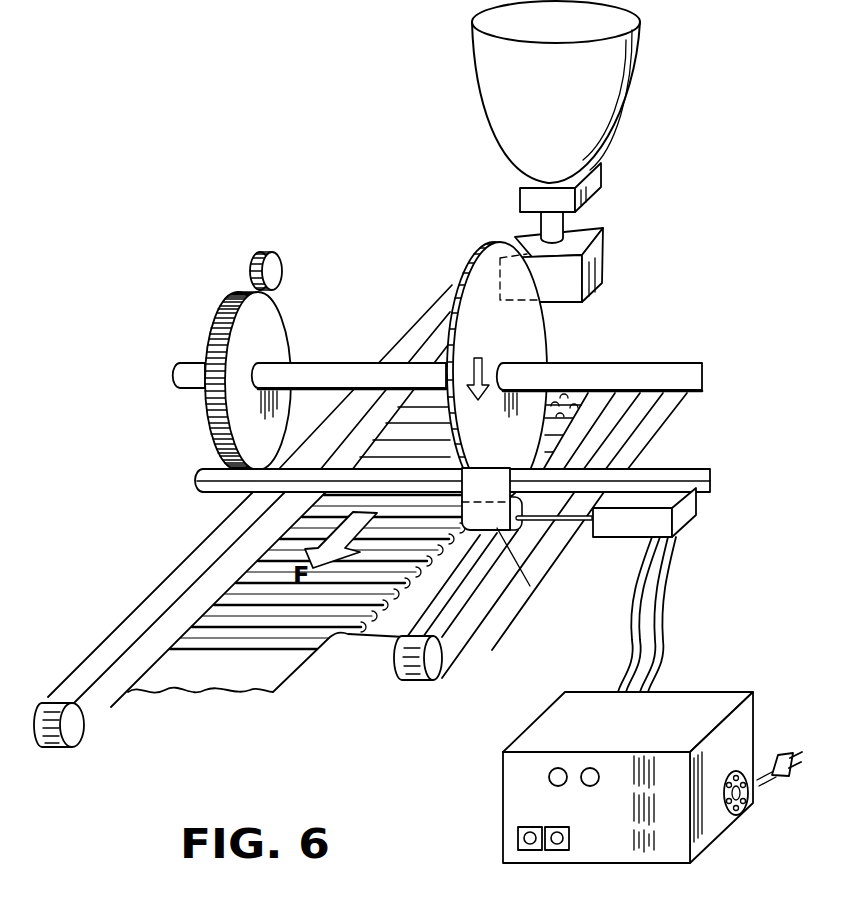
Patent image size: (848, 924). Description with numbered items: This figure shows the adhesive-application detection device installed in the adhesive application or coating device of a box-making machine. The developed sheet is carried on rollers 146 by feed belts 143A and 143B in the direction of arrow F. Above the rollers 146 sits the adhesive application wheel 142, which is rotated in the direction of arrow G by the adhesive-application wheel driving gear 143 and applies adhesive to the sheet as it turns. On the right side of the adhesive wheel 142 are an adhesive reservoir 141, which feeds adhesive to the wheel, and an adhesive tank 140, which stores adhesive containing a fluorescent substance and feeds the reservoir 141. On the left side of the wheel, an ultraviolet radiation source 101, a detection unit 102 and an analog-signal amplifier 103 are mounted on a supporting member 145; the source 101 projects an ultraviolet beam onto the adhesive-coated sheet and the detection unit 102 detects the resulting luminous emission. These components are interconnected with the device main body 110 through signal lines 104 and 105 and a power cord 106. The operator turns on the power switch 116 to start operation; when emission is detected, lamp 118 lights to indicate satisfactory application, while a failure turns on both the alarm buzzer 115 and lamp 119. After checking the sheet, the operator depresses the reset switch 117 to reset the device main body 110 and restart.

The adhesive tank 140 is at (633, 85).
The adhesive reservoir 141 is at (604, 259).
The adhesive application wheel 142 is at (548, 338).
The adhesive-application wheel driving gear 143 is at (289, 322).
The feed belt 143A is at (128, 629).
The feed belt 143B is at (403, 662).
The rollers 146 is at (327, 643).
The supporting member 145 is at (665, 474).
The ultraviolet radiation source 101 is at (513, 478).
The detection unit 102 is at (536, 575).
The signal line 104 is at (578, 522).
The analog-signal amplifier 103 is at (698, 512).
The signal line 105 is at (632, 594).
The power cord 106 is at (668, 612).
The device main body 110 is at (726, 683).
The alarm buzzer 115 is at (738, 815).
The power switch 116 is at (528, 851).
The reset switch 117 is at (557, 851).
The lamp 118 is at (558, 767).
The lamp 119 is at (593, 768).